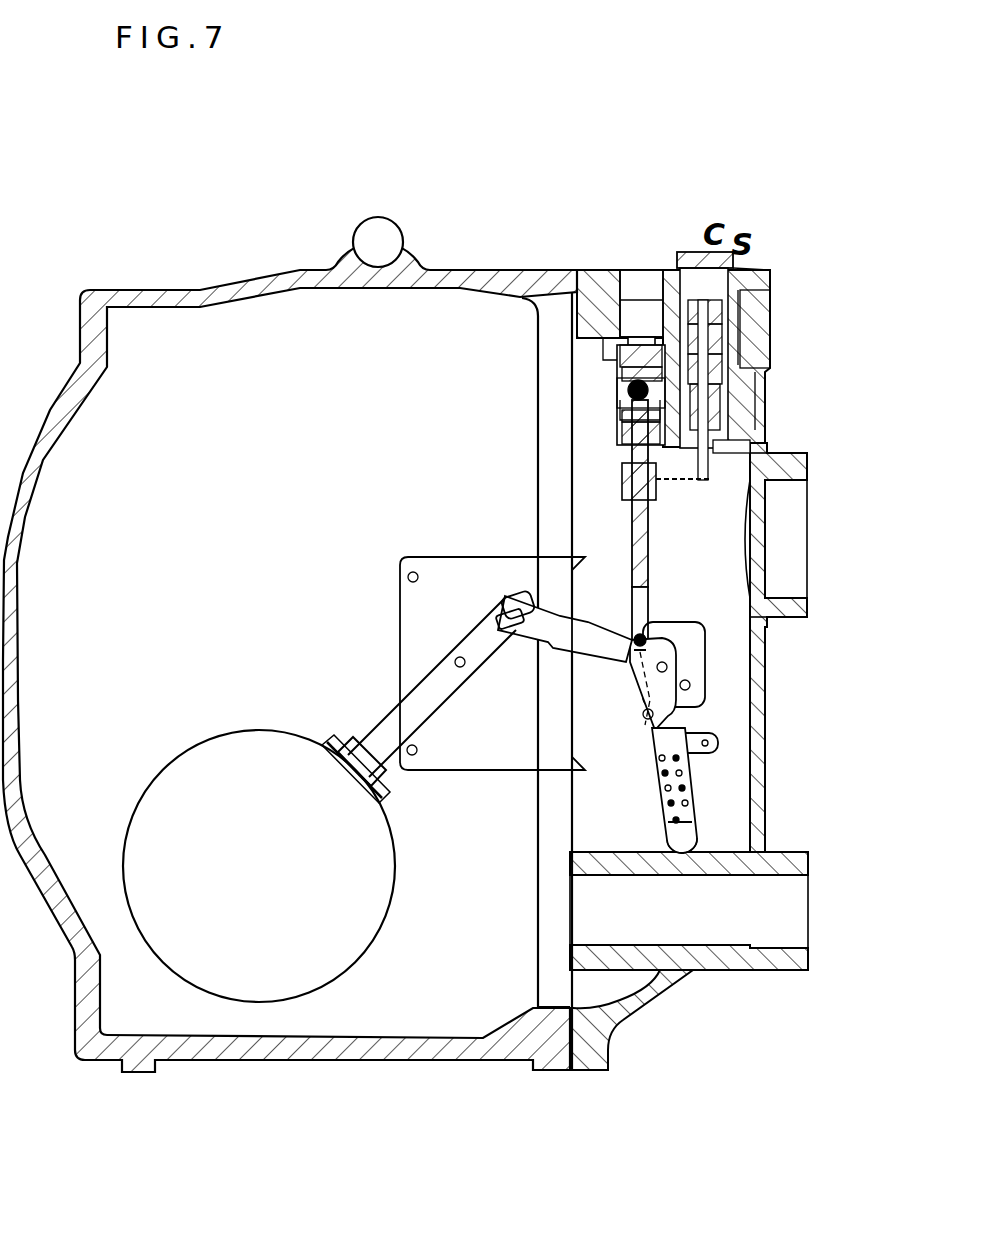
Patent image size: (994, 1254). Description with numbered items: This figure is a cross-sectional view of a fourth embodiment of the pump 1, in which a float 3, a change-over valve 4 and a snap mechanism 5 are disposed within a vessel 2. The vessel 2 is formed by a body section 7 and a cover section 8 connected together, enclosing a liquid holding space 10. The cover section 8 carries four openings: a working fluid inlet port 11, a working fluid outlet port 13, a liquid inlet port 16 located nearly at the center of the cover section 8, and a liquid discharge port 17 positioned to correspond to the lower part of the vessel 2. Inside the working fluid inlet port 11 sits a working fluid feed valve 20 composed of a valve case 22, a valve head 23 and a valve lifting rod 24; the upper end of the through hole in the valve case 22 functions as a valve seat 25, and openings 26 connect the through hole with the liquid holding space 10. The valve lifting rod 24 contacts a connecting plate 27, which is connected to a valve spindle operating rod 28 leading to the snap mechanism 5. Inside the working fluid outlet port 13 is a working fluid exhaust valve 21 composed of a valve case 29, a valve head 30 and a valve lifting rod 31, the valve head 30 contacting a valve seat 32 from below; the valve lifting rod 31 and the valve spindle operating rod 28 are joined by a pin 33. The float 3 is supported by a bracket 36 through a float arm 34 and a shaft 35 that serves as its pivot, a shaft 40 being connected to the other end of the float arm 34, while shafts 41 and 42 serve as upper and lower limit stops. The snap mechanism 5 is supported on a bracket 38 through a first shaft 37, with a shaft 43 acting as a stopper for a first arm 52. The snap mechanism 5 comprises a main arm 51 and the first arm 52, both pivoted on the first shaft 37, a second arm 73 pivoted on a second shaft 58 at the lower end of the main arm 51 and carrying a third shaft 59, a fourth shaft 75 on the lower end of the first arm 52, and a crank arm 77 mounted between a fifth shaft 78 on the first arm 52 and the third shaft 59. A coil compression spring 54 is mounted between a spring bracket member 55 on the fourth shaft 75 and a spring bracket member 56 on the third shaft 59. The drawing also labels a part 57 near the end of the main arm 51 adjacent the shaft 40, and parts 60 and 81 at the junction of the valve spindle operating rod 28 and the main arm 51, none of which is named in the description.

The pump 1 is at (497, 237).
The vessel 2 is at (266, 248).
The float 3 is at (172, 762).
The change-over valve 4 is at (722, 466).
The snap mechanism 5 is at (683, 633).
The body section 7 is at (160, 297).
The cover section 8 is at (762, 285).
The liquid holding space 10 is at (204, 390).
The working fluid inlet port 11 is at (758, 300).
The working fluid outlet port 13 is at (640, 282).
The liquid inlet port 16 is at (790, 545).
The liquid discharge port 17 is at (785, 912).
The working fluid feed valve 20 is at (728, 405).
The working fluid exhaust valve 21 is at (598, 395).
The valve case 22 is at (713, 350).
The valve head 23 is at (696, 300).
The valve lifting rod 24 is at (722, 428).
The valve seat 25 is at (713, 314).
The openings 26 is at (713, 381).
The connecting plate 27 is at (620, 482).
The valve spindle operating rod 28 is at (648, 535).
The valve case 29 is at (624, 402).
The valve head 30 is at (620, 372).
The valve lifting rod 31 is at (628, 420).
The valve seat 32 is at (612, 347).
The pin 33 is at (640, 452).
The float arm 34 is at (432, 680).
The shaft 35 is at (452, 650).
The bracket 36 is at (420, 613).
The first shaft 37 is at (667, 677).
The bracket 38 is at (694, 652).
The shaft 40 is at (500, 605).
The shaft 41 is at (406, 577).
The shaft 42 is at (415, 756).
The shaft 43 is at (690, 690).
The main arm 51 is at (520, 640).
The first arm 52 is at (720, 747).
The coil compression spring 54 is at (658, 793).
The spring bracket member 55 is at (668, 822).
The spring bracket member 56 is at (655, 762).
The fork 57 is at (522, 612).
The second shaft 58 is at (642, 713).
The third shaft 59 is at (706, 756).
The pivot 60 is at (652, 625).
The second arm 73 is at (640, 735).
The fourth shaft 75 is at (698, 832).
The crank arm 77 is at (710, 754).
The fifth shaft 78 is at (716, 752).
The contact 81 is at (650, 640).